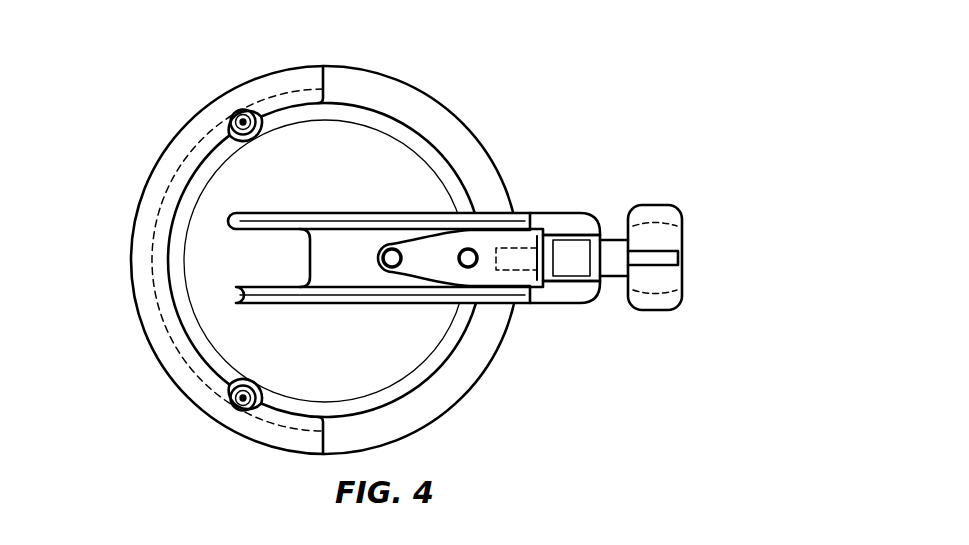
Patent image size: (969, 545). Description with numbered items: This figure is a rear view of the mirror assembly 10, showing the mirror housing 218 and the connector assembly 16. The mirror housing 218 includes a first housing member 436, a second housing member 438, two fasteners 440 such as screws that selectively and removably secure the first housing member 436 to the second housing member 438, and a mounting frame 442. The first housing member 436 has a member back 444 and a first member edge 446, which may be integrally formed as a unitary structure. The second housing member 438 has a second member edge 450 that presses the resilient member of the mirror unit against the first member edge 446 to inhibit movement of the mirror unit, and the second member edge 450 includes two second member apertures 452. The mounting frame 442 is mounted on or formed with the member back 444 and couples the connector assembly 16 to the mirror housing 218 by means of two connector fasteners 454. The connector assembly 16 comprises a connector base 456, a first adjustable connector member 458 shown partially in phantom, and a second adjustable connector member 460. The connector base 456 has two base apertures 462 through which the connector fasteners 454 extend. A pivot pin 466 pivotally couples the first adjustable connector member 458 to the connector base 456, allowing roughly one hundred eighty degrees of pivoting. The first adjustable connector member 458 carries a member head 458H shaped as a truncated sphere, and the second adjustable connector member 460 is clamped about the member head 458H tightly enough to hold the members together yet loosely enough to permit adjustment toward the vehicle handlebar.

The mirror assembly 10 is at (527, 129).
The connector assembly 16 is at (654, 331).
The mirror housing 218 is at (434, 80).
The first housing member 436 is at (437, 400).
The second housing member 438 is at (147, 322).
The fasteners 440 is at (238, 114).
The mounting frame 442 is at (347, 243).
The member back 444 is at (348, 150).
The first member edge 446 is at (500, 182).
The second member edge 450 is at (137, 203).
The second member aperture 452 is at (231, 121).
The connector fasteners 454 is at (390, 260).
The connector base 456 is at (432, 263).
The first adjustable connector member 458 is at (615, 252).
The member head 458H is at (658, 293).
The second adjustable connector member 460 is at (672, 217).
The base apertures 462 is at (473, 267).
The pivot pin 466 is at (573, 297).